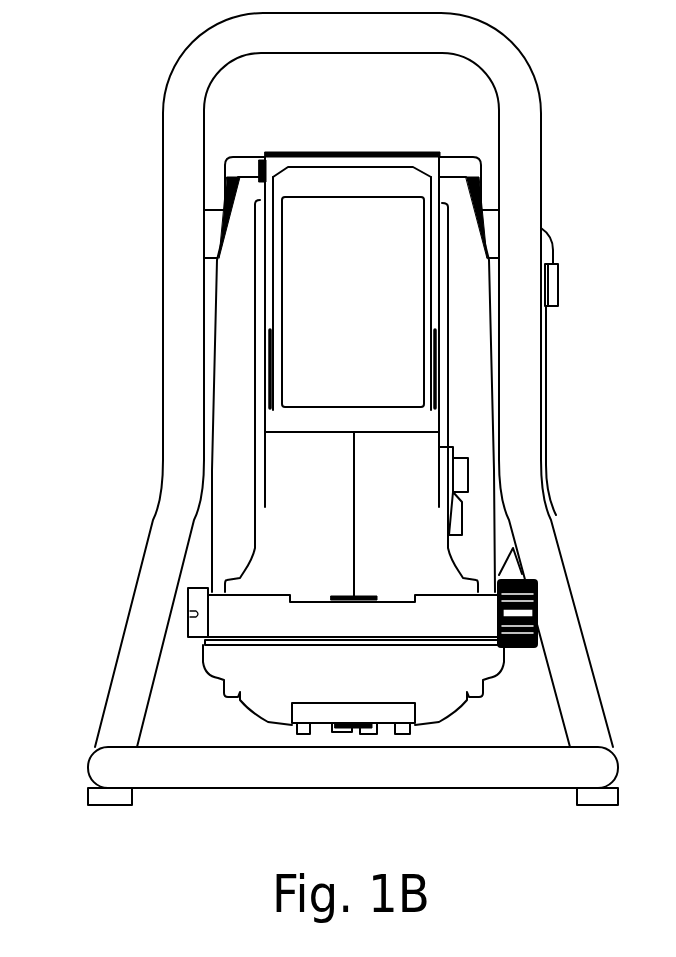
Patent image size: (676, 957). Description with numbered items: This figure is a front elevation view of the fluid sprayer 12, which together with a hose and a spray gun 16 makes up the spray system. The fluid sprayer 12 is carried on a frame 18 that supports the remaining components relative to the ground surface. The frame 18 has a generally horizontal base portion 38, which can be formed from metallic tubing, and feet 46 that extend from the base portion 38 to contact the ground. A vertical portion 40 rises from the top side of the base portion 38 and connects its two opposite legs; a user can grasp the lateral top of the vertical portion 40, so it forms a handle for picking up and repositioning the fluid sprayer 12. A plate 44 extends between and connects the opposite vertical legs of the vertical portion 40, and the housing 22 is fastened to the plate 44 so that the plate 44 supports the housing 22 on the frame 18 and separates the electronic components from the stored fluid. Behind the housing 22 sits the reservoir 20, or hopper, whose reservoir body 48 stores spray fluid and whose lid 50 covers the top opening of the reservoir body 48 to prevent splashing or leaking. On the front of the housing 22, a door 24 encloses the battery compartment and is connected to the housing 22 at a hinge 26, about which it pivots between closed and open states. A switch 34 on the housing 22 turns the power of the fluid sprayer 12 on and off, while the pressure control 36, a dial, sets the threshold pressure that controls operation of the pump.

The fluid sprayer 12 is at (104, 118).
The spray gun 16 is at (327, 542).
The frame 18 is at (572, 114).
The reservoir 20 is at (492, 190).
The housing 22 is at (232, 358).
The door 24 is at (346, 218).
The hinge 26 is at (264, 143).
The switch 34 is at (468, 475).
The pressure control 36 is at (537, 615).
The base portion 38 is at (512, 777).
The vertical portion 40 is at (521, 172).
The plate 44 is at (496, 400).
The feet 46 is at (110, 797).
The reservoir body 48 is at (549, 332).
The lid 50 is at (493, 237).